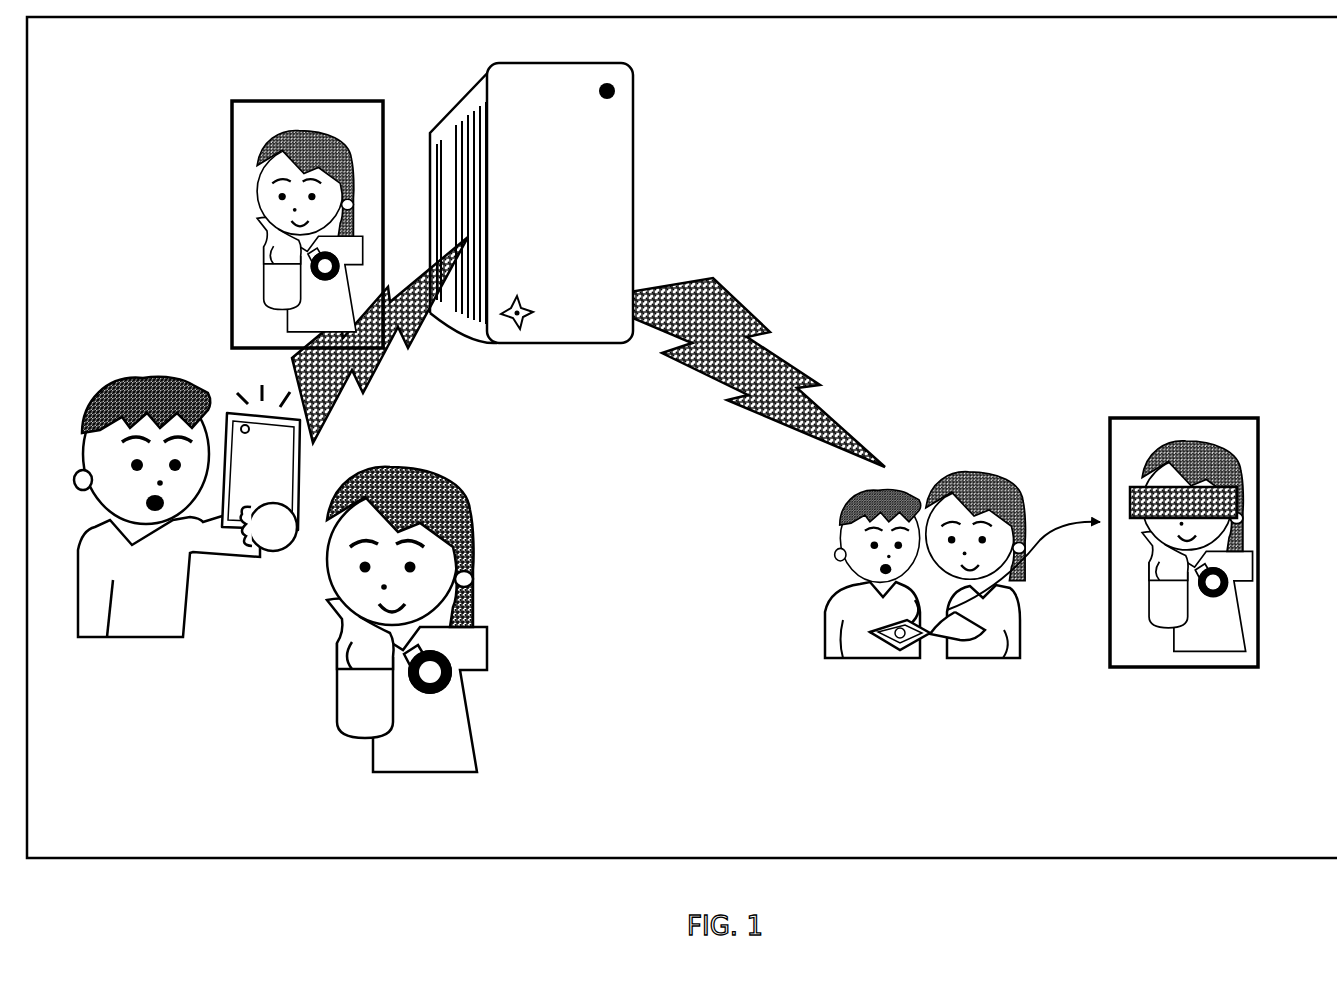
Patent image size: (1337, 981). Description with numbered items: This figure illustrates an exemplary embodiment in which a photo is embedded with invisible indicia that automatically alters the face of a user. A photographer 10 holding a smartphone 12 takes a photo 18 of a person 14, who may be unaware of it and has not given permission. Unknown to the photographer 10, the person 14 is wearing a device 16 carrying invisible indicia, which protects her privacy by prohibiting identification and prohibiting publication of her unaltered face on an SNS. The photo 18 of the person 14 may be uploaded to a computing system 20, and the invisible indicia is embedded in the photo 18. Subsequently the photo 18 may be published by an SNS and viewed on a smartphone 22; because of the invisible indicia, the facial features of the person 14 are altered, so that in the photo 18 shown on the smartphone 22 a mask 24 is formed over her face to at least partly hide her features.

The photographer 10 is at (128, 637).
The smartphone 12 is at (250, 397).
The person 14 is at (427, 772).
The device 16 is at (446, 688).
The photo 18 is at (232, 138).
The computing system 20 is at (633, 185).
The smartphone 22 is at (862, 658).
The mask 24 is at (1230, 513).